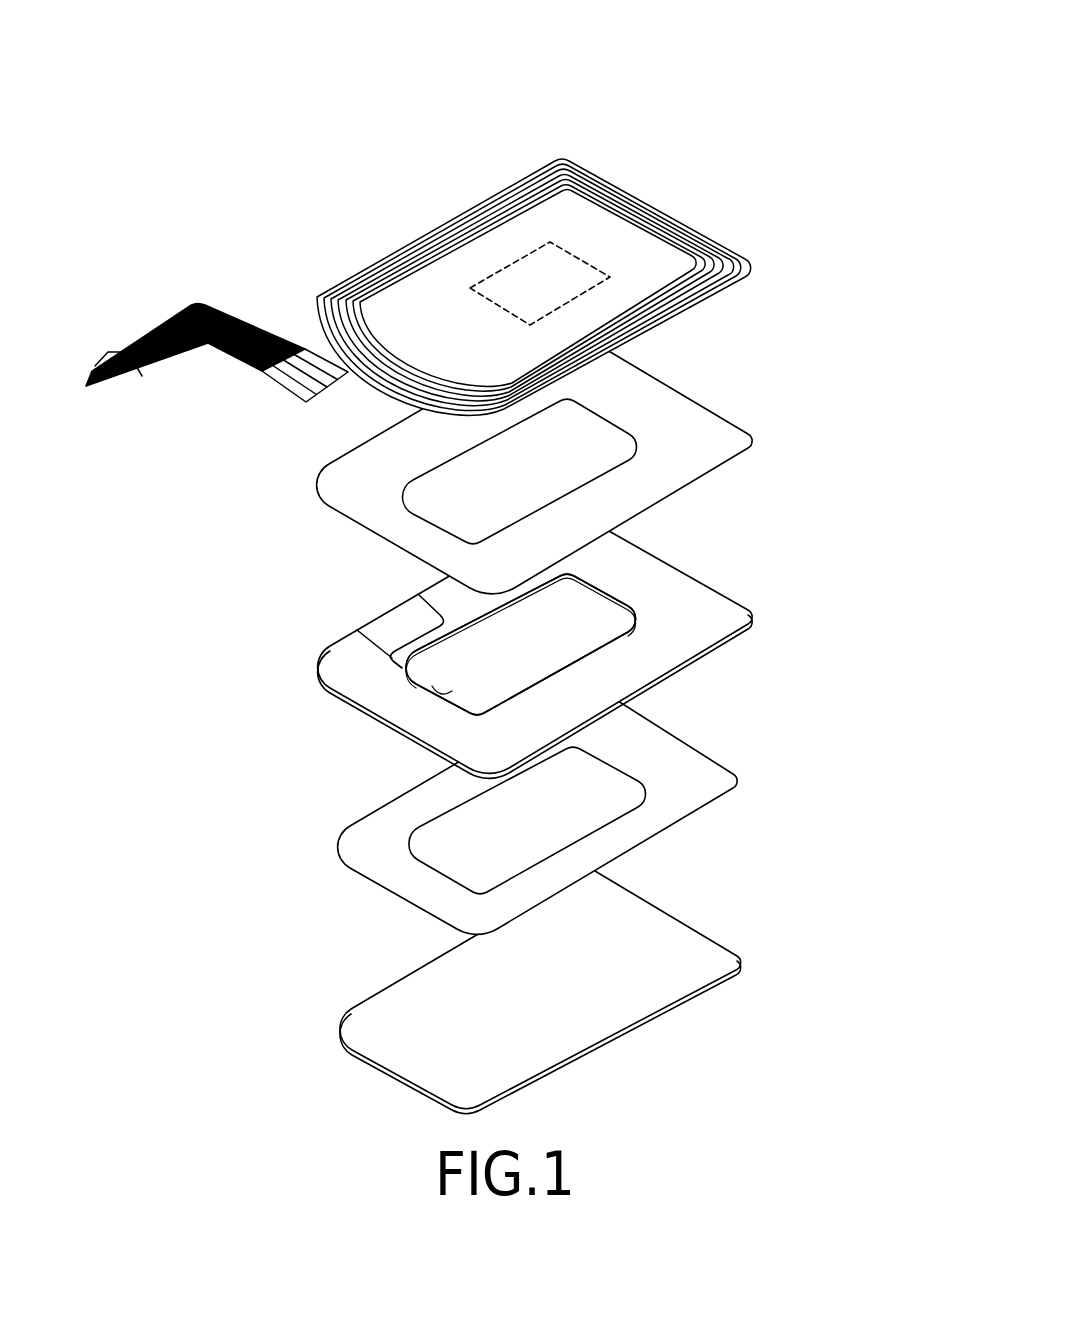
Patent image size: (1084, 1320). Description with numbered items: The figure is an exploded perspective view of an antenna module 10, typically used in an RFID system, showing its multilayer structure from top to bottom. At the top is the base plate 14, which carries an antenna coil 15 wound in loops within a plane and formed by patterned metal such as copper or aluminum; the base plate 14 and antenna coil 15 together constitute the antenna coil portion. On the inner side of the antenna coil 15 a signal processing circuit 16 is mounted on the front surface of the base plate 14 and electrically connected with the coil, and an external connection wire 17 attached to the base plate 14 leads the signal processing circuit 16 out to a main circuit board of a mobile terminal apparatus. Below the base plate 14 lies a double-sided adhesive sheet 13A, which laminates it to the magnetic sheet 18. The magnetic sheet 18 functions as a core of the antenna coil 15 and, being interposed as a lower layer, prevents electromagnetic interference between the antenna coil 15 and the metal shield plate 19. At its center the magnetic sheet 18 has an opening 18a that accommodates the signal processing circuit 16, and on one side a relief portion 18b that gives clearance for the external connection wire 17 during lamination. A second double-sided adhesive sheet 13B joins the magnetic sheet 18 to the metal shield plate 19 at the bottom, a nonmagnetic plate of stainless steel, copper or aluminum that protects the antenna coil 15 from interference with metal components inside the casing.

The antenna module 10 is at (813, 112).
The double-sided adhesive sheet 13A is at (731, 424).
The double-sided adhesive sheet 13B is at (714, 757).
The base plate 14 is at (576, 250).
The antenna coil 15 is at (639, 200).
The signal processing circuit 16 is at (529, 245).
The external connection wire 17 is at (198, 301).
The magnetic sheet 18 is at (529, 644).
The opening 18a is at (414, 686).
The relief portion 18b is at (388, 628).
The metal shield plate 19 is at (713, 933).